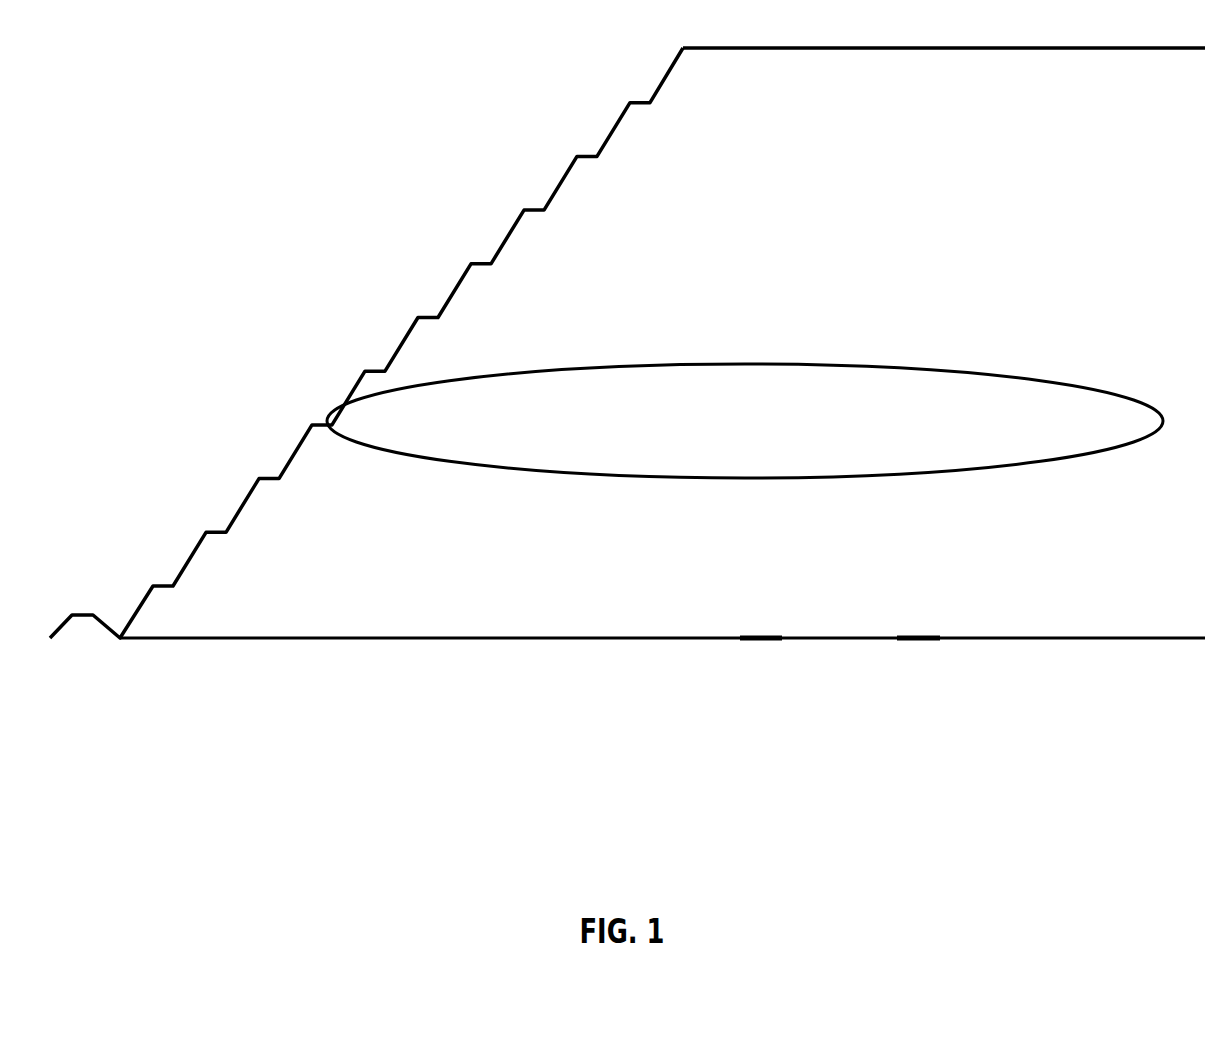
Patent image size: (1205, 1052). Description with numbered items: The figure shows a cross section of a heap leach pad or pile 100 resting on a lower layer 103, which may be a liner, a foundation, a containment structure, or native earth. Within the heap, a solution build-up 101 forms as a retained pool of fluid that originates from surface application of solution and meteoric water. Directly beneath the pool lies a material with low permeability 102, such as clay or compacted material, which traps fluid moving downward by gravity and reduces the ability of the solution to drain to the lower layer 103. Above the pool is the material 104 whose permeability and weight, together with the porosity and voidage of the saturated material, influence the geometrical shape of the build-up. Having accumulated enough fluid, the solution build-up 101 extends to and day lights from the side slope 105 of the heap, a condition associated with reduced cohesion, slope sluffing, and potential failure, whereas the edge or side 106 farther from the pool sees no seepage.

The heap leach pad or pile 100 is at (944, 131).
The solution build-up 101 is at (1005, 468).
The material with low permeability 102 is at (750, 570).
The lower layer 103 is at (453, 642).
The material above the build-up 104 is at (933, 280).
The side slope of heap or pile 105 is at (333, 418).
The edge or side of the heap or pile 106 is at (567, 165).